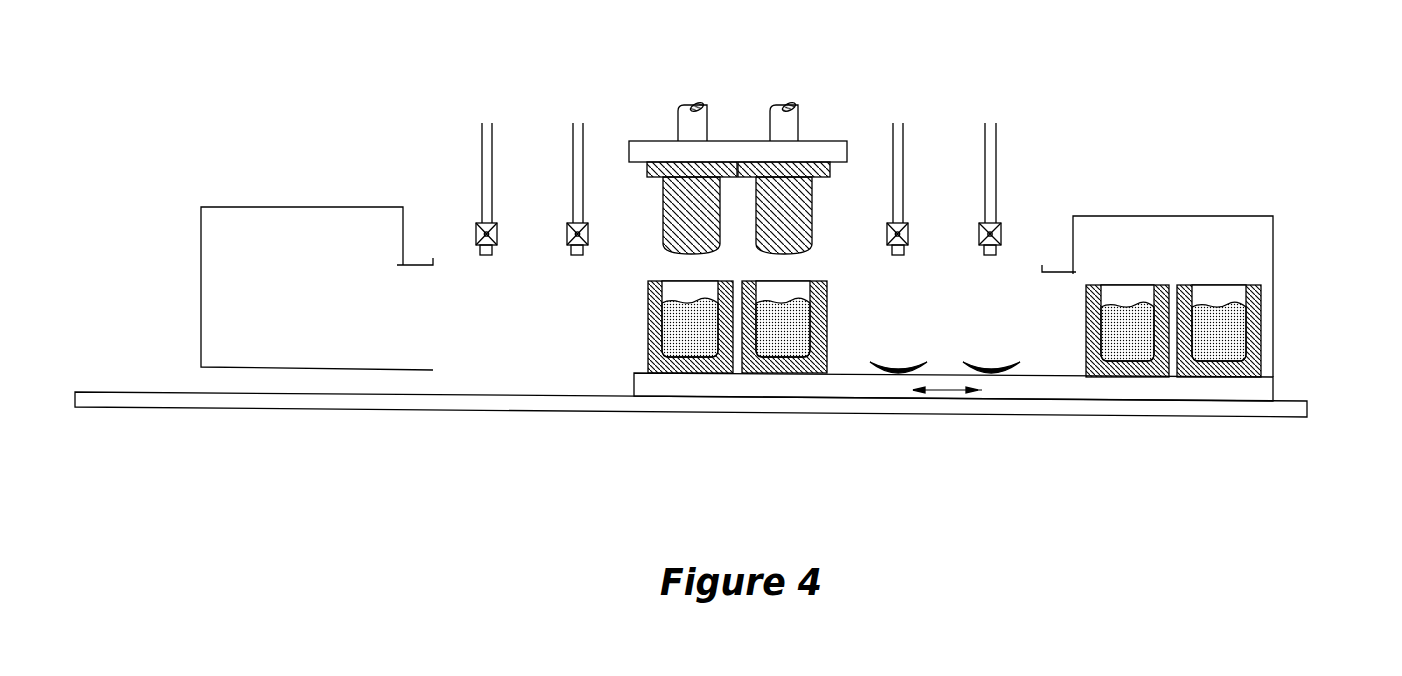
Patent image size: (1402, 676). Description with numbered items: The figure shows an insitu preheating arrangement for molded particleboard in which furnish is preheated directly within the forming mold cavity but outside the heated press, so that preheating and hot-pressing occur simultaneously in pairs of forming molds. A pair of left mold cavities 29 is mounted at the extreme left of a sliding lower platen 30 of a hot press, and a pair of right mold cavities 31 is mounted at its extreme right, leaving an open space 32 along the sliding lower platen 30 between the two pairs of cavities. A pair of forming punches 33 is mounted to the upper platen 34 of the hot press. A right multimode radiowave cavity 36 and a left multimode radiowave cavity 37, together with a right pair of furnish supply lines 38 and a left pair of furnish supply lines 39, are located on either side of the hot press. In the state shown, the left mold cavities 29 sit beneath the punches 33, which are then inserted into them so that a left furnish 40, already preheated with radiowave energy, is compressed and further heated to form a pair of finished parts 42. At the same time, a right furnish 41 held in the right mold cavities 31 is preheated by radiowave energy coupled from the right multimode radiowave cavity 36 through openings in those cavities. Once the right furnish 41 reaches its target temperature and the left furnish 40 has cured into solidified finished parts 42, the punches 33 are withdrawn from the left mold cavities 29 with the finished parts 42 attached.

The left mold cavities 29 is at (840, 315).
The sliding lower platen 30 is at (1275, 388).
The right mold cavities 31 is at (1290, 313).
The open space 32 is at (953, 337).
The forming punches 33 is at (837, 208).
The upper platen 34 is at (658, 142).
The right multimode radiowave cavity 36 is at (1166, 216).
The left multimode radiowave cavity 37 is at (298, 208).
The right pair of furnish supply lines 38 is at (985, 173).
The left pair of furnish supply lines 39 is at (571, 167).
The left furnish 40 is at (690, 327).
The right furnish 41 is at (1130, 333).
The finished parts 42 is at (1003, 365).